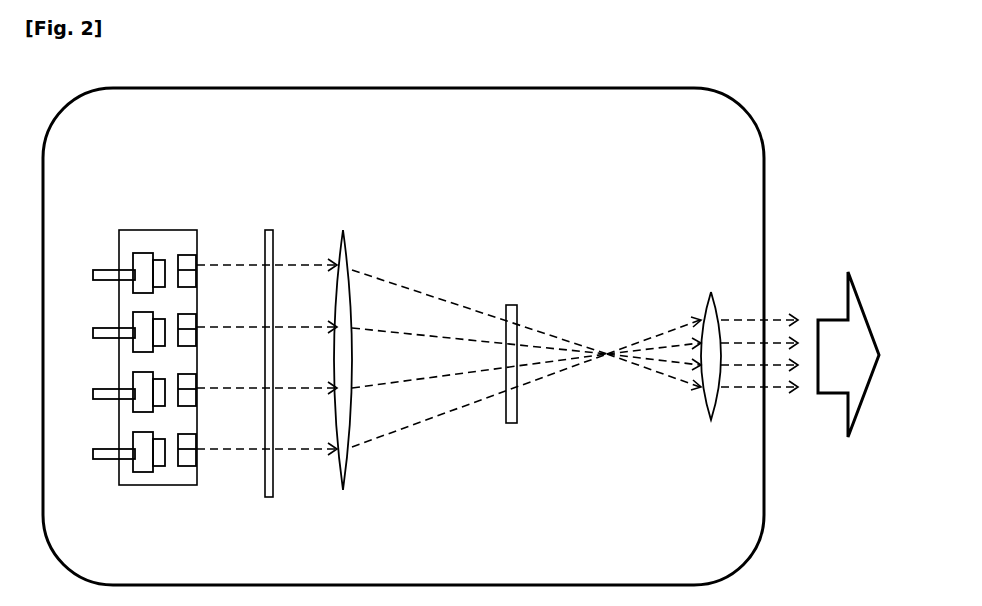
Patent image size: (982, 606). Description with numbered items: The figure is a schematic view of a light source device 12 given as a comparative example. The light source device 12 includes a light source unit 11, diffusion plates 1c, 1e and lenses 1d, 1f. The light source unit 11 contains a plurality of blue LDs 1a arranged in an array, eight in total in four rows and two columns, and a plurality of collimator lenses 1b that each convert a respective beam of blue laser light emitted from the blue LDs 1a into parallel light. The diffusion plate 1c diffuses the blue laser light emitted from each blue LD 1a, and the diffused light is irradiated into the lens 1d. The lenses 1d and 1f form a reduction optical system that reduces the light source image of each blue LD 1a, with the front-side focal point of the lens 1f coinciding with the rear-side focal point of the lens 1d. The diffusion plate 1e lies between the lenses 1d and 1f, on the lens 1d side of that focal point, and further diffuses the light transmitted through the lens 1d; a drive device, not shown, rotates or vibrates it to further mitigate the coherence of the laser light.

The light source device 12 is at (439, 336).
The light source unit 11 is at (163, 305).
The blue LD 1a is at (128, 412).
The collimator lens 1b is at (165, 413).
The diffusion plate 1c is at (294, 313).
The lens 1d is at (367, 307).
The diffusion plate 1e is at (538, 314).
The lens 1f is at (689, 302).